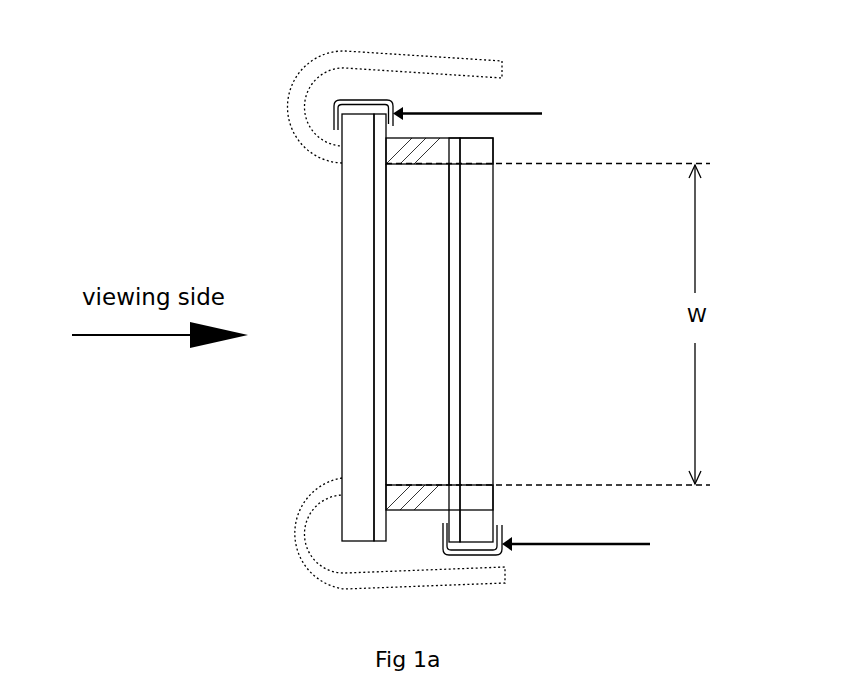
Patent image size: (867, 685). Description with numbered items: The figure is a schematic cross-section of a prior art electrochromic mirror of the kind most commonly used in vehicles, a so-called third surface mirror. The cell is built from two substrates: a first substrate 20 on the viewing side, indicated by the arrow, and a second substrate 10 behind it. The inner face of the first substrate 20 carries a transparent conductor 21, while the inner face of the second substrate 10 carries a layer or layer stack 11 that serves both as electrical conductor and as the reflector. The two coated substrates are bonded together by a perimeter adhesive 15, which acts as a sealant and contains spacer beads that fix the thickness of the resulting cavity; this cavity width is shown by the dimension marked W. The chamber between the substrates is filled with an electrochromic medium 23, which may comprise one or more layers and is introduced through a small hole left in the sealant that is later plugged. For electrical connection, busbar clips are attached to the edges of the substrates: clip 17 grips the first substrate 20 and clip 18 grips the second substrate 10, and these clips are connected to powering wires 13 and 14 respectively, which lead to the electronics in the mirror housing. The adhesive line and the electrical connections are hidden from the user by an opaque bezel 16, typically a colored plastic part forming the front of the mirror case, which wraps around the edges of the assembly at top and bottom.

The second substrate 10 is at (477, 382).
The conductive reflector layer 11 is at (455, 336).
The powering wire 13 is at (518, 117).
The powering wire 14 is at (607, 542).
The perimeter adhesive 15 is at (428, 155).
The bezel 16 is at (462, 70).
The busbar clip 17 is at (383, 100).
The busbar clip 18 is at (500, 532).
The first substrate 20 is at (362, 420).
The transparent conductor 21 is at (378, 345).
The electrochromic medium 23 is at (418, 270).